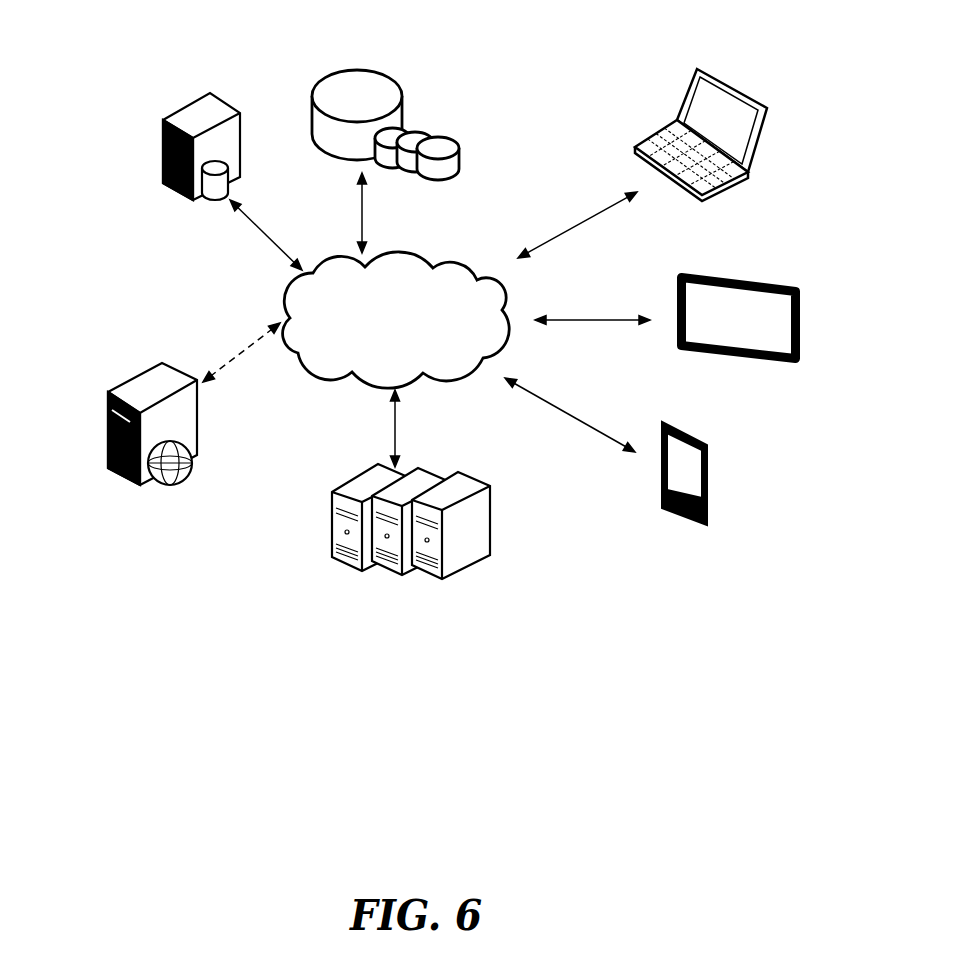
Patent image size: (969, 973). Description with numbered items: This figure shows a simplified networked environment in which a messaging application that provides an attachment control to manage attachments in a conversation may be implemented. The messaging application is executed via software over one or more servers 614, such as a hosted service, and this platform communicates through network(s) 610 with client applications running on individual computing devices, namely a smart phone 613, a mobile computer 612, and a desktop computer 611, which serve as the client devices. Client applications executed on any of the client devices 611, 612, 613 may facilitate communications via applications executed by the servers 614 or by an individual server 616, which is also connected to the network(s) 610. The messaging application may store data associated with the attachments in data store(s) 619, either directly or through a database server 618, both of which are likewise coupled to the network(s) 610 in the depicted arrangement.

The network(s) 610 is at (405, 233).
The desktop computer 611 is at (740, 63).
The mobile computer 612 is at (775, 251).
The smart phone 613 is at (717, 433).
The servers 614 is at (358, 464).
The individual server 616 is at (129, 365).
The database server 618 is at (202, 218).
The data store(s) 619 is at (376, 41).